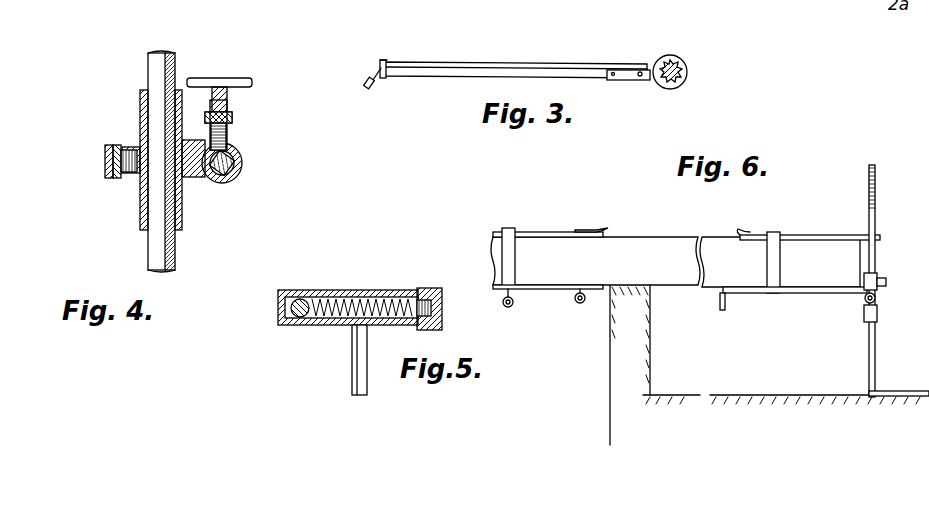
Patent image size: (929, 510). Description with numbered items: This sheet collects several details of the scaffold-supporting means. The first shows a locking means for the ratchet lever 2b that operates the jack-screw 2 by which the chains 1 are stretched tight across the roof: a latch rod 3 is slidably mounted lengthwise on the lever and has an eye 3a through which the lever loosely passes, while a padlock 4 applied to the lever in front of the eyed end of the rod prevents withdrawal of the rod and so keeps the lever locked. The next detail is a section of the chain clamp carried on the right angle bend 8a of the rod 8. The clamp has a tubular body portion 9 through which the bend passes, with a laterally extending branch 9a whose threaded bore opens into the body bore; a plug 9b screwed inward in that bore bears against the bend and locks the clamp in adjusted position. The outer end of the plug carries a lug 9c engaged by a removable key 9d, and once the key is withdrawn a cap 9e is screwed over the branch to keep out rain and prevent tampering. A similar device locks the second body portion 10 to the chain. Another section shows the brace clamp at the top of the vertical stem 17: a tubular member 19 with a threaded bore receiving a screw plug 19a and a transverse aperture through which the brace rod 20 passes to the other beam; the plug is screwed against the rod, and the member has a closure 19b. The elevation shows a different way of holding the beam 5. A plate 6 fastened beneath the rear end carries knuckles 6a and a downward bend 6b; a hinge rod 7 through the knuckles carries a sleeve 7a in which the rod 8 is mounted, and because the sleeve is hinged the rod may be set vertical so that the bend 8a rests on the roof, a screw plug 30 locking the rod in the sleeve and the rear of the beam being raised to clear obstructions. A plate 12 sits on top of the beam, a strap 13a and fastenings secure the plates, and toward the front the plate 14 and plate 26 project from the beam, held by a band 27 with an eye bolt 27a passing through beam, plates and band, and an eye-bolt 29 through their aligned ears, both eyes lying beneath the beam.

In FIG. 4, the chain 1 is at (218, 180).
In FIG. 3, the jack-screw 2 is at (688, 72).
In FIG. 3, the ratchet lever 2b is at (560, 72).
In FIG. 3, the latch rod 3 is at (492, 62).
In FIG. 3, the eye 3a is at (385, 78).
In FIG. 3, the padlock 4 is at (374, 84).
In FIG. 6, the beam 5 is at (660, 248).
In FIG. 6, the plate 6 is at (760, 294).
In FIG. 6, the knuckles 6a is at (878, 298).
In FIG. 6, the downward bend 6b is at (722, 311).
In FIG. 6, the hinge rod 7 is at (866, 300).
In FIG. 6, the sleeve 7a is at (866, 323).
In FIG. 6, the rod 8 is at (876, 356).
In FIG. 4, the right angle bend 8a is at (155, 70).
In FIG. 6, the right angle bend 8a is at (897, 397).
In FIG. 4, the tubular body portion 9 is at (182, 221).
In FIG. 4, the branch 9a is at (133, 174).
In FIG. 4, the plug 9b is at (132, 147).
In FIG. 4, the lug 9c is at (112, 160).
In FIG. 4, the key 9d is at (226, 80).
In FIG. 4, the cap 9e is at (105, 150).
In FIG. 4, the tubular body portion 10 is at (242, 160).
In FIG. 6, the plate 12 is at (808, 235).
In FIG. 6, the strap 13a is at (768, 255).
In FIG. 6, the plate 14 is at (545, 232).
In FIG. 5, the vertical stem 17 is at (356, 366).
In FIG. 5, the tubular member 19 is at (383, 292).
In FIG. 5, the screw plug 19a is at (340, 292).
In FIG. 5, the closure 19b is at (443, 318).
In FIG. 5, the brace rod 20 is at (293, 311).
In FIG. 6, the plate 26 is at (542, 290).
In FIG. 6, the band 27 is at (502, 248).
In FIG. 6, the eye bolt 27a is at (510, 308).
In FIG. 6, the eye-bolt 29 is at (581, 304).
In FIG. 6, the screw plug 30 is at (890, 282).